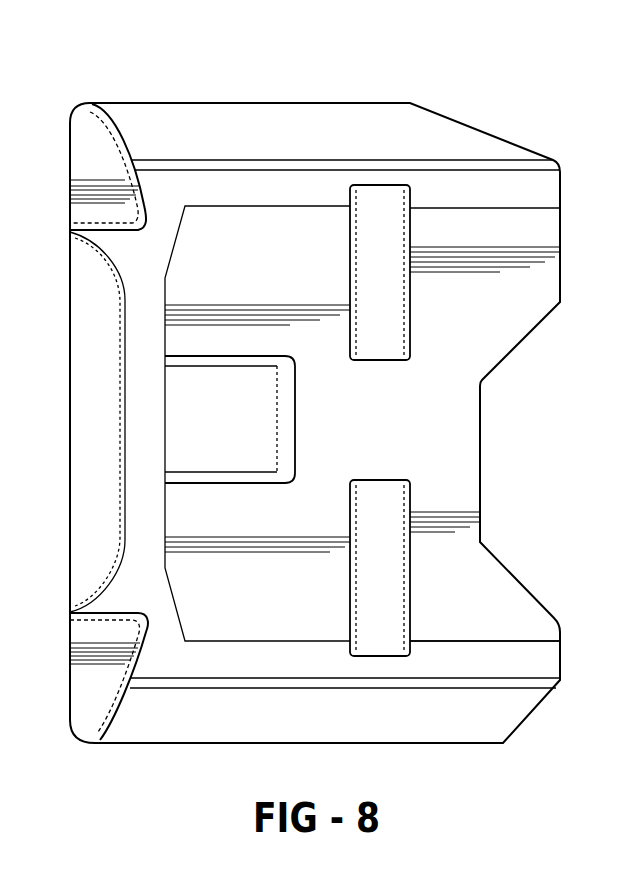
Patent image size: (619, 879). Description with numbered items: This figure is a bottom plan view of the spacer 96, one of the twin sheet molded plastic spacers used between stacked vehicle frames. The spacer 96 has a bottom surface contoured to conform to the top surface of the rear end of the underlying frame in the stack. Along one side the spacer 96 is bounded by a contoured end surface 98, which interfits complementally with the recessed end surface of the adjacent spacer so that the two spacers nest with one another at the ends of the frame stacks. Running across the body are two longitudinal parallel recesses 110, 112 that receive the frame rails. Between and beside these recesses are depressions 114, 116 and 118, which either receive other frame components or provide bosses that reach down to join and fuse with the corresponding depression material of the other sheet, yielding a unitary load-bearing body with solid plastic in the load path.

The spacer 96 is at (360, 103).
The contoured end surface 98 is at (518, 350).
The longitudinal parallel recess 110 is at (507, 182).
The longitudinal parallel recess 112 is at (525, 655).
The depression 114 is at (250, 427).
The depression 116 is at (390, 332).
The depression 118 is at (383, 567).